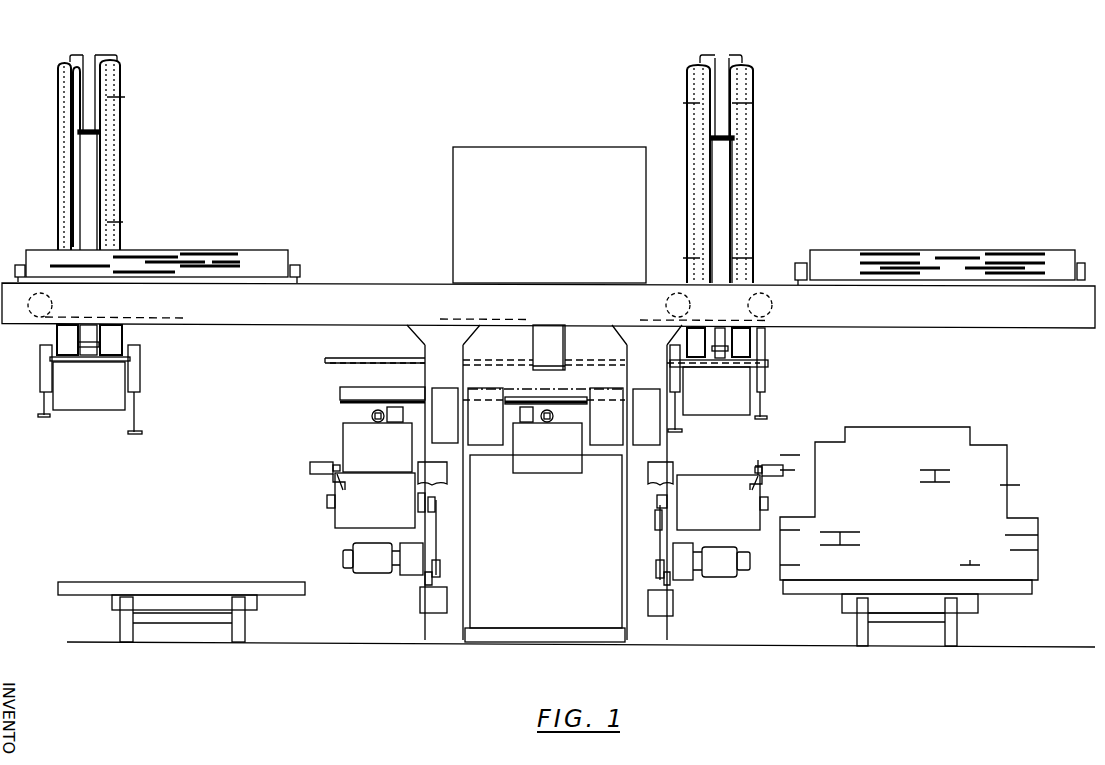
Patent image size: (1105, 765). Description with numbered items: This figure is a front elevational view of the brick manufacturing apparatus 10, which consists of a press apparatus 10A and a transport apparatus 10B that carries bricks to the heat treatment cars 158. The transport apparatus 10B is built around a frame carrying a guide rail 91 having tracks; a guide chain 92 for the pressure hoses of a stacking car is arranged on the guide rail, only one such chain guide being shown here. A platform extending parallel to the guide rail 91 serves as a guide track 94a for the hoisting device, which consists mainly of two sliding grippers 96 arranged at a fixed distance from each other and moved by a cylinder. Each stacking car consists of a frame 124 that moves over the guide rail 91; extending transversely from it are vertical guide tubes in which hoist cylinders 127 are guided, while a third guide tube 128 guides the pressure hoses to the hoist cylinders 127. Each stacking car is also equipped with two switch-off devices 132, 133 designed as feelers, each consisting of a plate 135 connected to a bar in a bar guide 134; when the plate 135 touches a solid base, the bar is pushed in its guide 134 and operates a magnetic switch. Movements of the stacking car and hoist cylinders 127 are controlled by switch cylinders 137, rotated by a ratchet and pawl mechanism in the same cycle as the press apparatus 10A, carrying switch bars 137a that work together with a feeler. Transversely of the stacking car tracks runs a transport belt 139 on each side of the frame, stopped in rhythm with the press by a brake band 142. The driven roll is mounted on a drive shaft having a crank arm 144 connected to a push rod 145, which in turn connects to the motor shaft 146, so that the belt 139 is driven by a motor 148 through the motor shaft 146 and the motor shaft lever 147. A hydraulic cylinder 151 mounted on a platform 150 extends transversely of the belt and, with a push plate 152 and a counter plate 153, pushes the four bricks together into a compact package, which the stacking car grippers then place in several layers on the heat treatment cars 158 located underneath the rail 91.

The brick manufacturing apparatus 10 is at (583, 389).
The press apparatus 10A is at (515, 625).
The transport apparatus 10B is at (465, 197).
The guide rail 91 is at (262, 309).
The guide chain 92 is at (53, 305).
The track 94a is at (343, 387).
The sliding grippers 96 is at (366, 401).
The stacking car frame 124 is at (775, 306).
The hoist cylinders 127 is at (70, 128).
The third guide tube 128 is at (95, 165).
The switch-off device 132 is at (43, 402).
The switch-off device 133 is at (136, 414).
The bar guide 134 is at (139, 380).
The plate 135 is at (49, 420).
The switch cylinders 137 is at (42, 257).
The switch bars 137a is at (198, 250).
The transport belt 139 is at (341, 518).
The brake band 142 is at (660, 500).
The crank arm 144 is at (433, 508).
The push rod 145 is at (436, 560).
The motor shaft 146 is at (428, 575).
The motor shaft lever 147 is at (425, 596).
The motor 148 is at (365, 571).
The platform 150 is at (333, 480).
The hydraulic cylinder 151 is at (310, 466).
The push plate 152 is at (764, 452).
The counter plate 153 is at (421, 463).
The heat treatment cars 158 is at (216, 580).